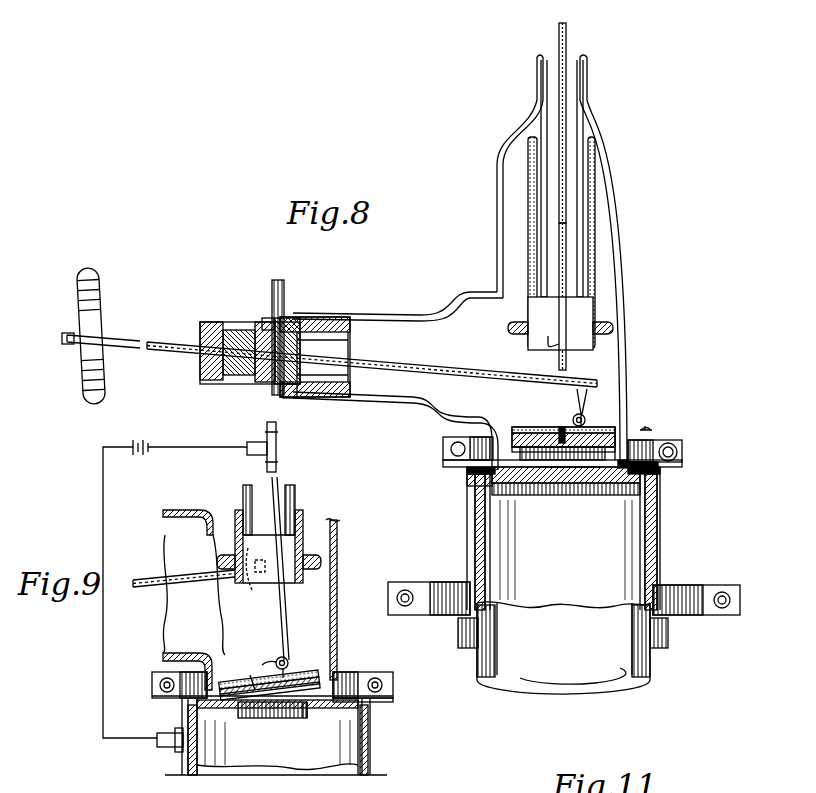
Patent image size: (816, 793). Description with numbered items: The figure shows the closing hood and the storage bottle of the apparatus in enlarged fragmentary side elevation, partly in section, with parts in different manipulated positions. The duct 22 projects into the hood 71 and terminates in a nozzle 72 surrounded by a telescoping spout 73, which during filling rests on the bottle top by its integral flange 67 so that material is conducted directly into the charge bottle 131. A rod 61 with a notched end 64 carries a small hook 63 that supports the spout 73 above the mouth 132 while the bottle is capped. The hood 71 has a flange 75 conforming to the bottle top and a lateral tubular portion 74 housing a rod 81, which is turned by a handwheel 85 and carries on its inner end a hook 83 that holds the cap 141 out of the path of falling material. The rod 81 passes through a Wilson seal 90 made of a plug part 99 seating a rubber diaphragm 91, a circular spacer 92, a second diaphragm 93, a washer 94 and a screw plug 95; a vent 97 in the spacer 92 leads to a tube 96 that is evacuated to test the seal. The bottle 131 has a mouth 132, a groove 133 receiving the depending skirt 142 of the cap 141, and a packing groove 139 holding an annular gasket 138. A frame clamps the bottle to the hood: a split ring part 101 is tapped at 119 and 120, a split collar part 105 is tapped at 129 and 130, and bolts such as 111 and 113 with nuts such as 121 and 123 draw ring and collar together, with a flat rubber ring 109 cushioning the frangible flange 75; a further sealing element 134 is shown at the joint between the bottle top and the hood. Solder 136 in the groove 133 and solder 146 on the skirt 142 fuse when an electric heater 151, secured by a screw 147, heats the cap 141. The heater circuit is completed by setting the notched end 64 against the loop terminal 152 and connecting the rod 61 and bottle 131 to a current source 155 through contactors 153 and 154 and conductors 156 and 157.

In FIG. 8, the duct 22 is at (572, 72).
In FIG. 8, the rod 61 is at (564, 118).
In FIG. 9, the rod 61 is at (285, 618).
In FIG. 8, the hook 63 is at (547, 340).
In FIG. 9, the hook 63 is at (278, 663).
In FIG. 8, the notched end 64 is at (566, 365).
In FIG. 9, the notched end 64 is at (265, 660).
In FIG. 8, the flange 67 is at (607, 332).
In FIG. 9, the flange 67 is at (320, 575).
In FIG. 8, the hood 71 is at (634, 157).
In FIG. 8, the nozzle 72 is at (598, 200).
In FIG. 9, the nozzle 72 is at (290, 500).
In FIG. 8, the telescoping spout 73 is at (598, 242).
In FIG. 9, the telescoping spout 73 is at (305, 520).
In FIG. 8, the tubular portion 74 is at (385, 330).
In FIG. 8, the flange 75 is at (450, 455).
In FIG. 9, the flange 75 is at (378, 686).
In FIG. 8, the rod 81 is at (172, 338).
In FIG. 9, the rod 81 is at (150, 580).
In FIG. 8, the hook 83 is at (588, 398).
In FIG. 9, the hook 83 is at (248, 585).
In FIG. 8, the handwheel 85 is at (98, 290).
In FIG. 8, the Wilson seal 90 is at (232, 312).
In FIG. 8, the rubber diaphragm 91 is at (292, 400).
In FIG. 8, the circular spacer 92 is at (285, 386).
In FIG. 8, the second rubber diaphragm 93 is at (260, 385).
In FIG. 8, the washer 94 is at (230, 385).
In FIG. 8, the screw plug 95 is at (207, 380).
In FIG. 8, the tube 96 is at (285, 300).
In FIG. 8, the vent 97 is at (270, 320).
In FIG. 8, the plug part 99 is at (328, 316).
In FIG. 8, the split ring part 101 is at (442, 618).
In FIG. 9, the split collar part 105 is at (163, 660).
In FIG. 8, the flat ring 109 is at (455, 468).
In FIG. 9, the flat ring 109 is at (365, 673).
In FIG. 8, the bolt 111 is at (466, 530).
In FIG. 9, the bolt 111 is at (180, 708).
In FIG. 8, the bolt 113 is at (661, 545).
In FIG. 8, the tapped hole 119 is at (731, 600).
In FIG. 8, the tapped hole 120 is at (405, 590).
In FIG. 8, the nut 121 is at (458, 630).
In FIG. 8, the nut 123 is at (668, 625).
In FIG. 8, the tapped hole 129 is at (682, 452).
In FIG. 9, the tapped hole 129 is at (383, 690).
In FIG. 9, the tapped hole 130 is at (158, 685).
In FIG. 8, the charge bottle 131 is at (630, 647).
In FIG. 9, the charge bottle 131 is at (372, 758).
In FIG. 8, the mouth 132 is at (640, 500).
In FIG. 9, the mouth 132 is at (272, 719).
In FIG. 8, the groove 133 is at (510, 484).
In FIG. 8, the seal ring 134 is at (470, 478).
In FIG. 9, the seal ring 134 is at (370, 706).
In FIG. 8, the solder ring 136 is at (550, 470).
In FIG. 8, the annular gasket 138 is at (475, 490).
In FIG. 8, the groove 139 is at (660, 478).
In FIG. 8, the cap 141 is at (514, 416).
In FIG. 9, the cap 141 is at (328, 690).
In FIG. 8, the skirt 142 is at (616, 445).
In FIG. 9, the skirt 142 is at (305, 720).
In FIG. 8, the solder layer 146 is at (540, 462).
In FIG. 8, the screw 147 is at (562, 427).
In FIG. 9, the screw 147 is at (262, 675).
In FIG. 8, the electric heater 151 is at (520, 428).
In FIG. 9, the electric heater 151 is at (336, 665).
In FIG. 8, the terminal post 152 is at (600, 396).
In FIG. 9, the terminal post 152 is at (288, 658).
In FIG. 9, the contactor 153 is at (165, 745).
In FIG. 9, the contactor 154 is at (278, 447).
In FIG. 9, the current source 155 is at (137, 442).
In FIG. 9, the connecting conductor 156 is at (165, 449).
In FIG. 9, the connecting conductor 157 is at (103, 500).